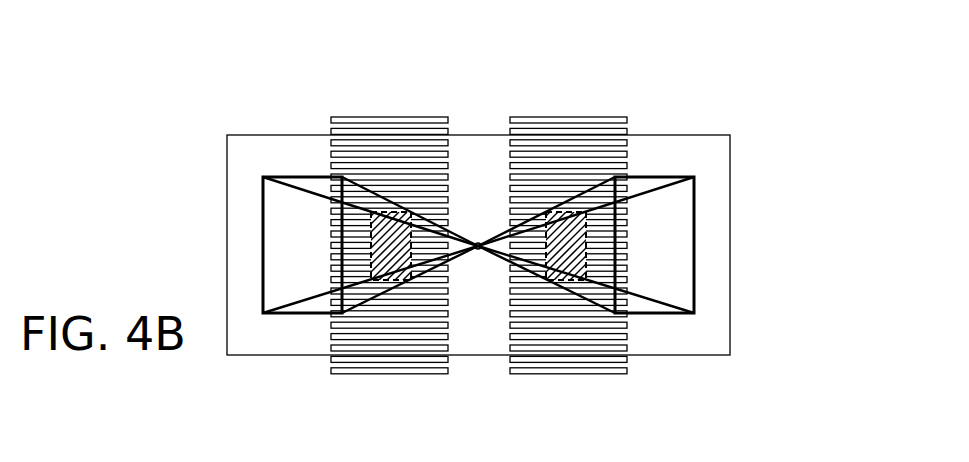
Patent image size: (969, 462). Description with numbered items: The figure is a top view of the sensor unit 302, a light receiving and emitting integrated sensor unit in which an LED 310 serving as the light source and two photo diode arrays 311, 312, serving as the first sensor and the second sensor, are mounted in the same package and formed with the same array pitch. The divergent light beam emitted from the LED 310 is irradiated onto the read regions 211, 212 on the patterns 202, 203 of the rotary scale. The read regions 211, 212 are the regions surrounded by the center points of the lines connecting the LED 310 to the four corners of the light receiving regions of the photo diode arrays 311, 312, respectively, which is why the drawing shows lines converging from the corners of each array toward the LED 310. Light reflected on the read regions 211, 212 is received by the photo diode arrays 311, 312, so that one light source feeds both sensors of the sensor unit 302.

The sensor unit 302 is at (732, 168).
The pattern 203 is at (390, 117).
The pattern 202 is at (597, 117).
The read region 212 is at (370, 246).
The read region 211 is at (587, 244).
The photo diode array 312 is at (303, 177).
The photo diode array 311 is at (650, 177).
The LED 310 is at (480, 243).